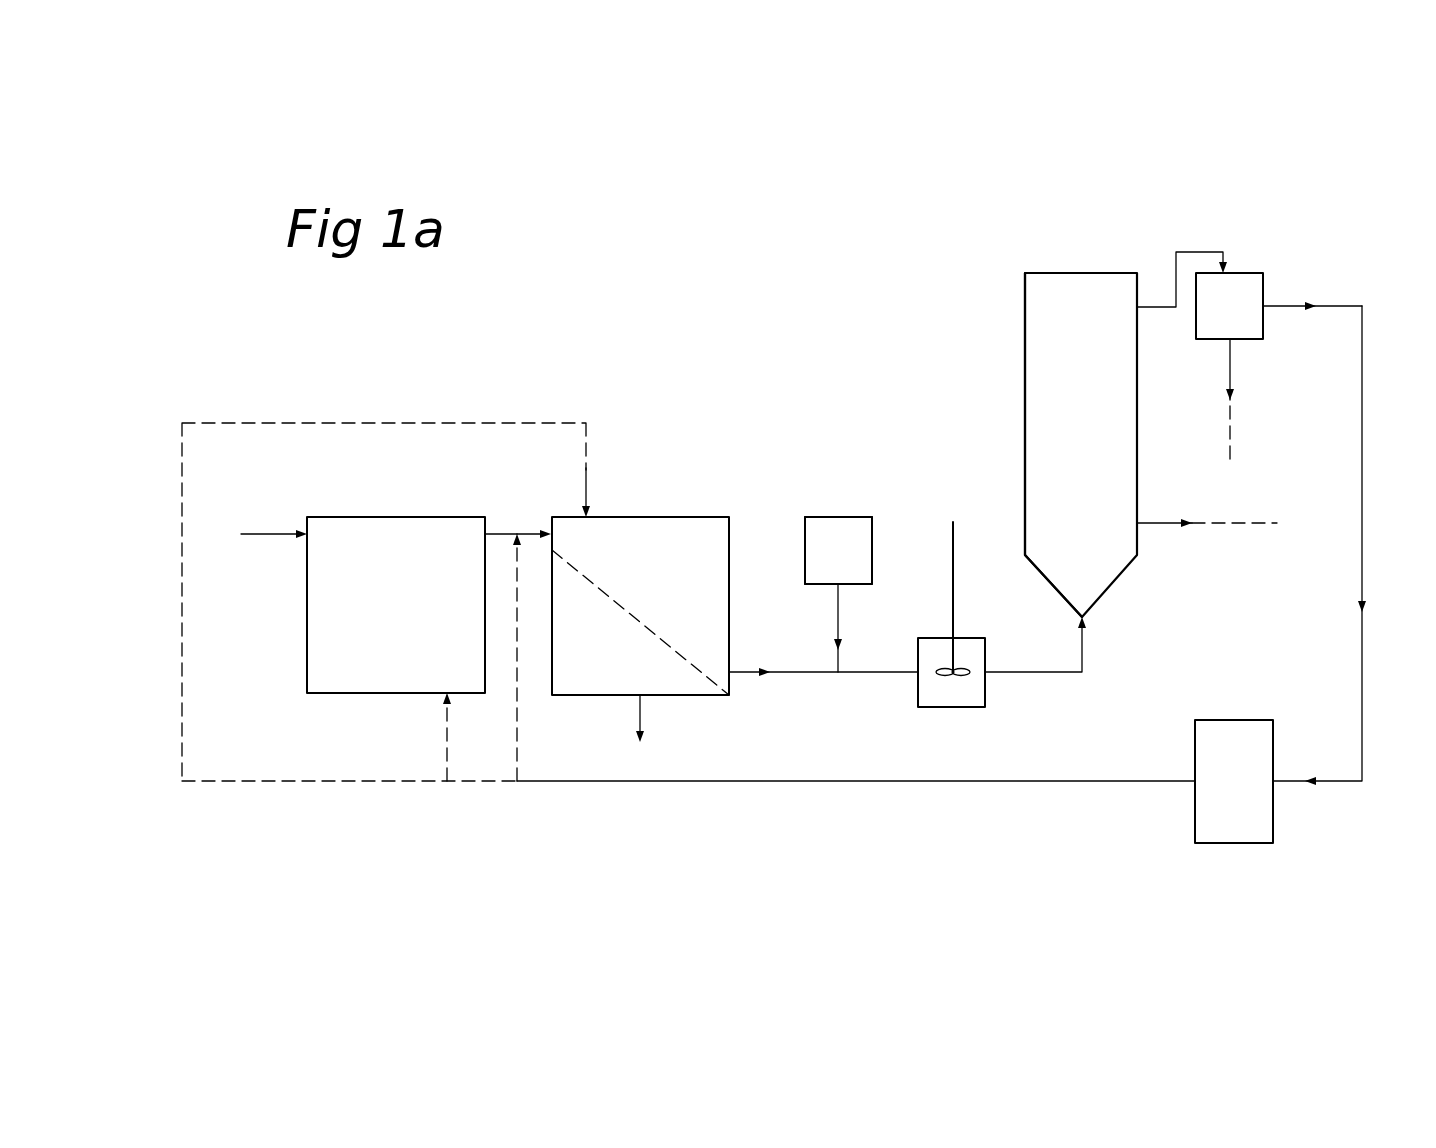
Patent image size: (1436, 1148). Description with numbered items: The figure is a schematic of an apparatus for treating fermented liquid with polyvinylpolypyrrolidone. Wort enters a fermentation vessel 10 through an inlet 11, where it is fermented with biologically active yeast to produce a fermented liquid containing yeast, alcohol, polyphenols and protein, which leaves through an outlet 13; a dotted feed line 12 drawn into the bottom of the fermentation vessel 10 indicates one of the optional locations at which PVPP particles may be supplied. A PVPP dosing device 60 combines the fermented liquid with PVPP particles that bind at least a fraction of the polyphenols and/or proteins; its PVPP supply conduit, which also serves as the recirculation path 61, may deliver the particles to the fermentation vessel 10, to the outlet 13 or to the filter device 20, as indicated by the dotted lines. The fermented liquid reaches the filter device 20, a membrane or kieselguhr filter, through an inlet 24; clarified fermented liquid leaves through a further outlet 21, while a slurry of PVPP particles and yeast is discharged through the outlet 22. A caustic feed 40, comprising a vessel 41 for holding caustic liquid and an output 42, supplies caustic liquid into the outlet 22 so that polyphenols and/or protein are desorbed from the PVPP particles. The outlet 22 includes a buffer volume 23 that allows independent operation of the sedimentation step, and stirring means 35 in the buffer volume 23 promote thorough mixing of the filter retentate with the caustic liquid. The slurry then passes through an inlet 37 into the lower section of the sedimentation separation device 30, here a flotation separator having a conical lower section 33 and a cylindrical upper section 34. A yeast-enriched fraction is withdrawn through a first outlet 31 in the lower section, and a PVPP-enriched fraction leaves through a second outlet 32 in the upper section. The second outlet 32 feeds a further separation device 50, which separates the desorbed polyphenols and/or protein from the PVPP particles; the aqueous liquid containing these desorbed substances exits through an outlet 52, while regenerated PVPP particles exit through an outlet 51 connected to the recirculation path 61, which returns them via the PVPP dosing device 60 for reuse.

The fermentation vessel 10 is at (394, 530).
The inlet 11 is at (271, 533).
The reagent inlet 12 is at (447, 723).
The outlet 13 is at (498, 533).
The inlet 24 is at (532, 533).
The filter device 20 is at (650, 535).
The further outlet for clarified fermented liquid 21 is at (640, 698).
The outlet 22 is at (785, 672).
The caustic feed 40 is at (820, 505).
The vessel 41 is at (862, 528).
The output 42 is at (839, 598).
The buffer volume 23 is at (972, 647).
The stirring means 35 is at (953, 550).
The inlet 37 is at (1082, 640).
The sedimentation separation device 30 is at (1005, 334).
The cylindrical upper section 34 is at (1025, 416).
The conical lower section 33 is at (1040, 570).
The first outlet 31 is at (1165, 522).
The second outlet 32 is at (1163, 305).
The further separation device 50 is at (1254, 264).
The outlet for regenerated PVPP particles 51 is at (1292, 305).
The outlet for aqueous liquid 52 is at (1233, 367).
The PVPP dosing device 60 is at (1227, 730).
The recirculation path 61 is at (1363, 720).